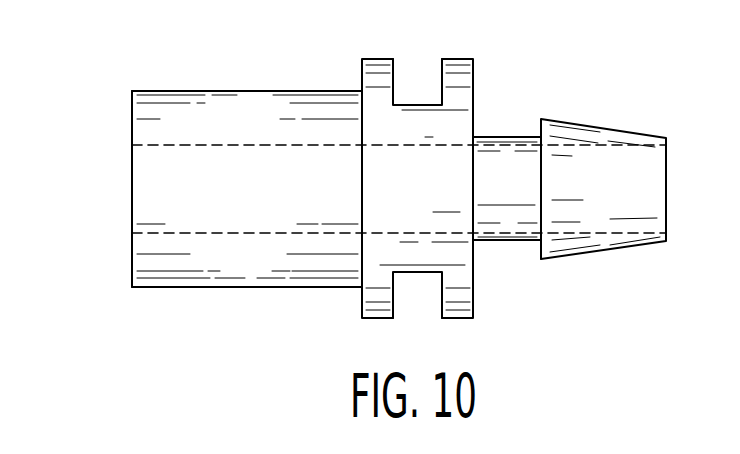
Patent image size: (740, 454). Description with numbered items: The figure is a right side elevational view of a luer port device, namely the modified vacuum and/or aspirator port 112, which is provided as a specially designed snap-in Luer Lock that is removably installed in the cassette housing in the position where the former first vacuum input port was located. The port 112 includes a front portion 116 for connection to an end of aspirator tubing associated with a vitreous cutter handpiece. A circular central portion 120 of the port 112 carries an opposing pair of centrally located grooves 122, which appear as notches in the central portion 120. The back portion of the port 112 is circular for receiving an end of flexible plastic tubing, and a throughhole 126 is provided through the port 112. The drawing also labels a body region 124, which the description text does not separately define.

The vacuum and/or aspirator port 112 is at (513, 70).
The front portion 116 is at (665, 116).
The circular central portion 120 is at (462, 58).
The grooves 122 is at (418, 80).
The body 124 is at (283, 91).
The throughhole 126 is at (138, 190).